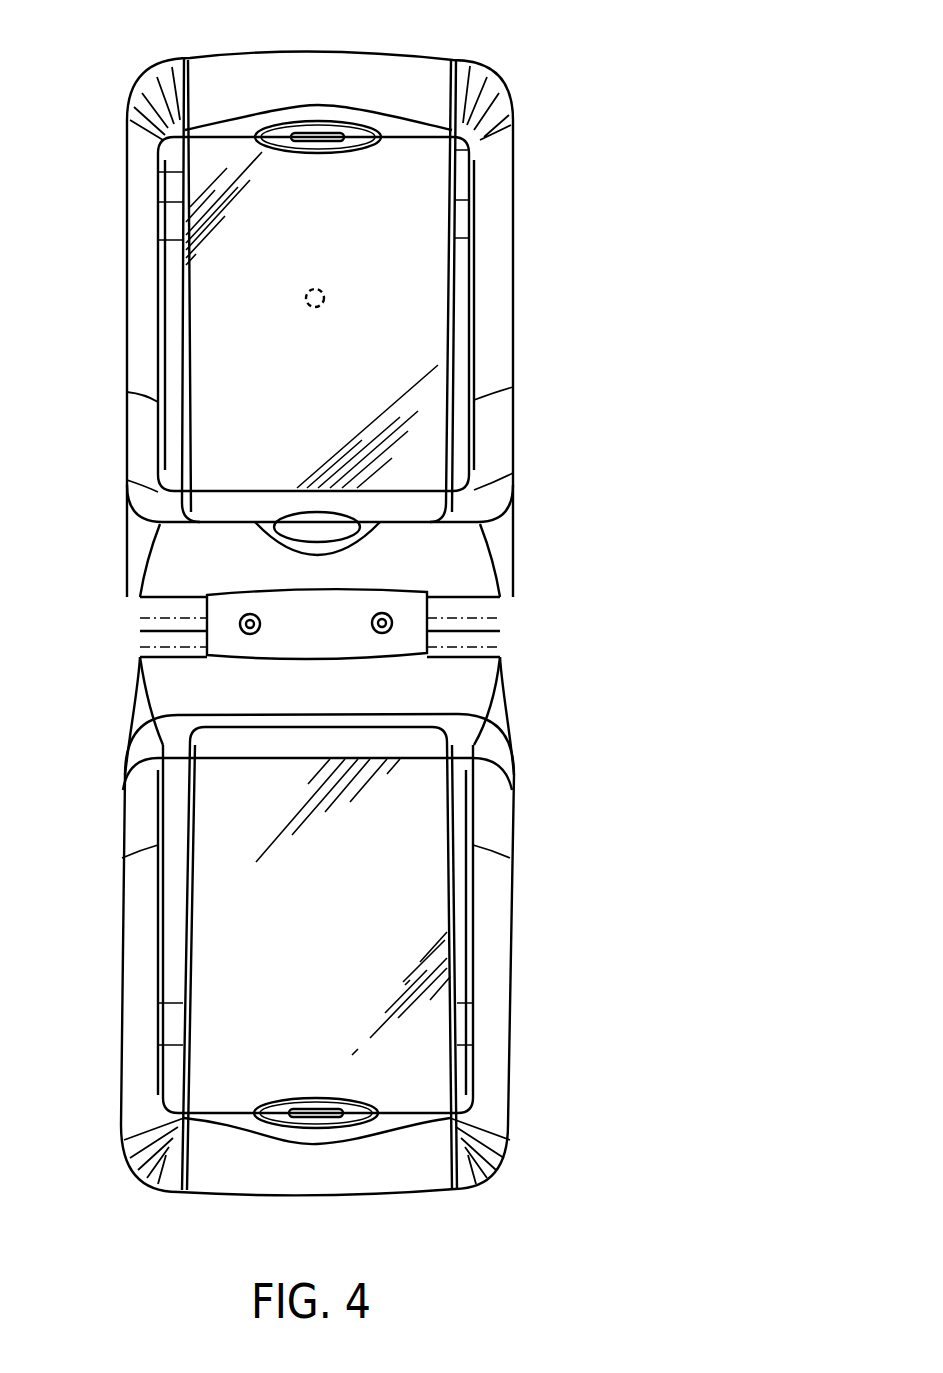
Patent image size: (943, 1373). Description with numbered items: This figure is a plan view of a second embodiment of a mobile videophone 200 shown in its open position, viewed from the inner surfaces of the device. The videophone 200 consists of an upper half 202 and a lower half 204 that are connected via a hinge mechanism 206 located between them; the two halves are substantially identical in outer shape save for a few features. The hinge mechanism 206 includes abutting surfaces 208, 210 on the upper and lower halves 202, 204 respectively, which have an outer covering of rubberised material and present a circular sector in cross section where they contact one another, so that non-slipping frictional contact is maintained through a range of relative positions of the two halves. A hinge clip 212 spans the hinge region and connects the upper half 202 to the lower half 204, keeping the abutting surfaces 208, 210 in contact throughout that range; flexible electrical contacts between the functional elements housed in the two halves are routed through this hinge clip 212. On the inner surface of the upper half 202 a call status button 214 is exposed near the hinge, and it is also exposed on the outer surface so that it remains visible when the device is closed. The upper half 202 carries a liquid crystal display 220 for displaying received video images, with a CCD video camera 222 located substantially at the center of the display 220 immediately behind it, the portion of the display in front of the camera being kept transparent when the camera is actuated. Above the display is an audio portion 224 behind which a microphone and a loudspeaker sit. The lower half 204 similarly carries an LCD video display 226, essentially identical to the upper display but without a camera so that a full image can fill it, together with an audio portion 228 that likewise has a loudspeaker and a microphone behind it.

The mobile videophone 200 is at (578, 146).
The upper half 202 is at (513, 370).
The lower half 204 is at (509, 962).
The hinge mechanism 206 is at (492, 607).
The abutting surface 208 is at (142, 618).
The abutting surface 210 is at (142, 640).
The hinge clip 212 is at (420, 600).
The call status button 214 is at (300, 527).
The liquid crystal display 220 is at (425, 298).
The CCD video camera 222 is at (308, 296).
The audio portion 224 is at (340, 125).
The LCD video display 226 is at (440, 893).
The audio portion 228 is at (310, 1100).